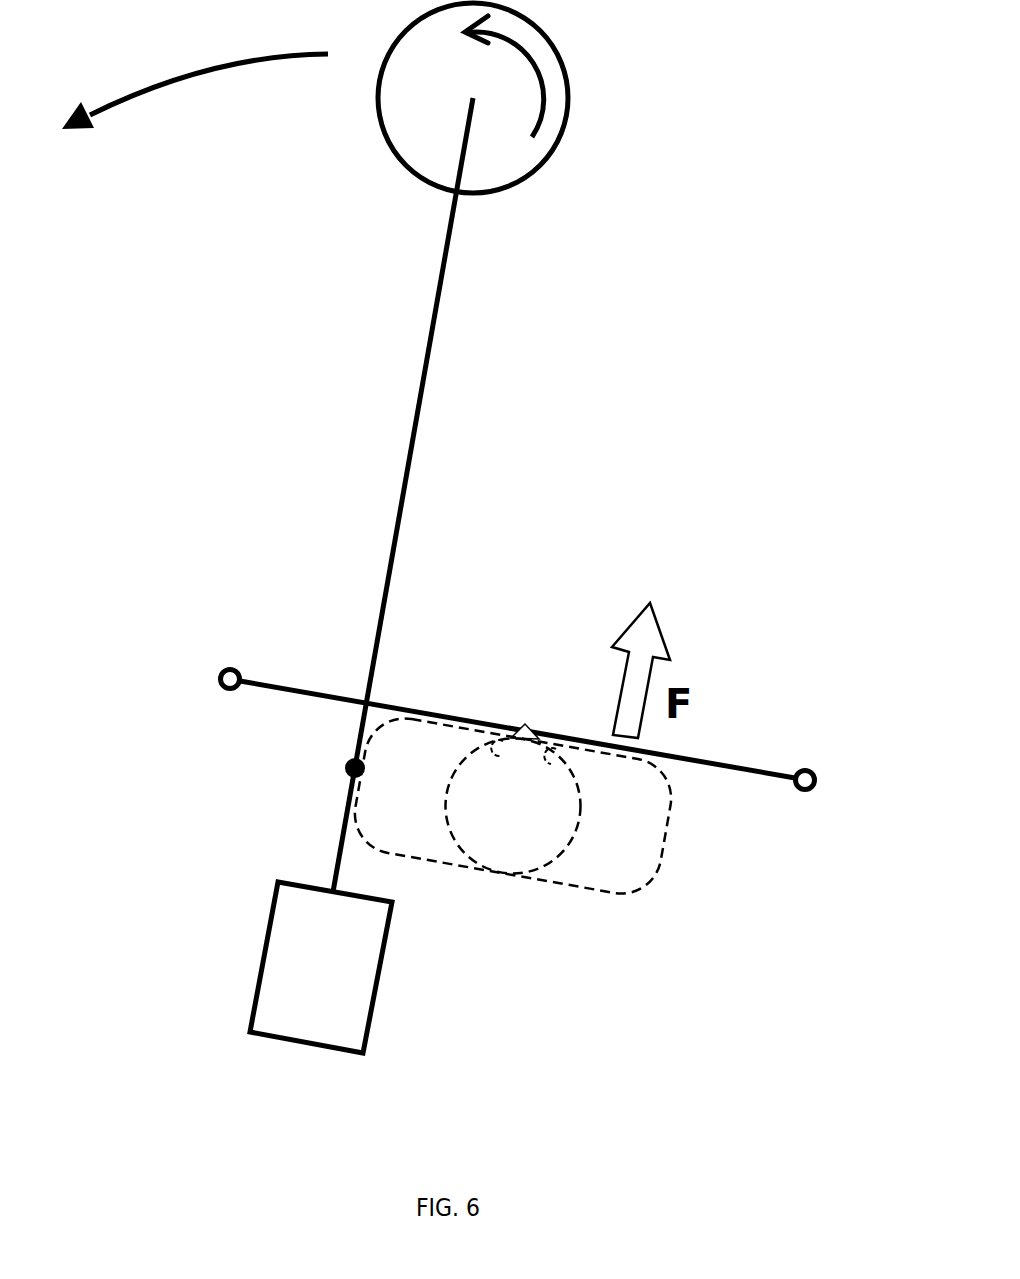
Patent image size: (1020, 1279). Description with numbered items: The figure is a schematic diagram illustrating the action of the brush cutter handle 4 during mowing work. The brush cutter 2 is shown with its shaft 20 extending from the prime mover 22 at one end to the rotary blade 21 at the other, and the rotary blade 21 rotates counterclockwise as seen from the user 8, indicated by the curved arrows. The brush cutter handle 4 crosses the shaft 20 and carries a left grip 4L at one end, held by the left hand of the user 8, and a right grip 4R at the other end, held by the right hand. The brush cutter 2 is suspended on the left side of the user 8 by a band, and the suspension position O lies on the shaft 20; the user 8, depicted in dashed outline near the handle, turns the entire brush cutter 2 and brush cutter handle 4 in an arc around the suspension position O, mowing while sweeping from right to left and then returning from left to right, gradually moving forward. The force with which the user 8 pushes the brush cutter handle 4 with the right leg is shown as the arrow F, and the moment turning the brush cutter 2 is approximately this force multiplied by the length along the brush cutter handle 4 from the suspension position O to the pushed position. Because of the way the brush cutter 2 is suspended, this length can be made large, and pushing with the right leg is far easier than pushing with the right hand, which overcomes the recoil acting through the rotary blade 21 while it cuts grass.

The brush cutter 2 is at (295, 1050).
The brush cutter handle 4 is at (481, 717).
The left grip 4L is at (232, 667).
The right grip 4R is at (811, 768).
The user 8 is at (597, 892).
The shaft 20 is at (435, 333).
The rotary blade 21 is at (560, 143).
The prime mover 22 is at (383, 970).
The suspension position O is at (345, 768).